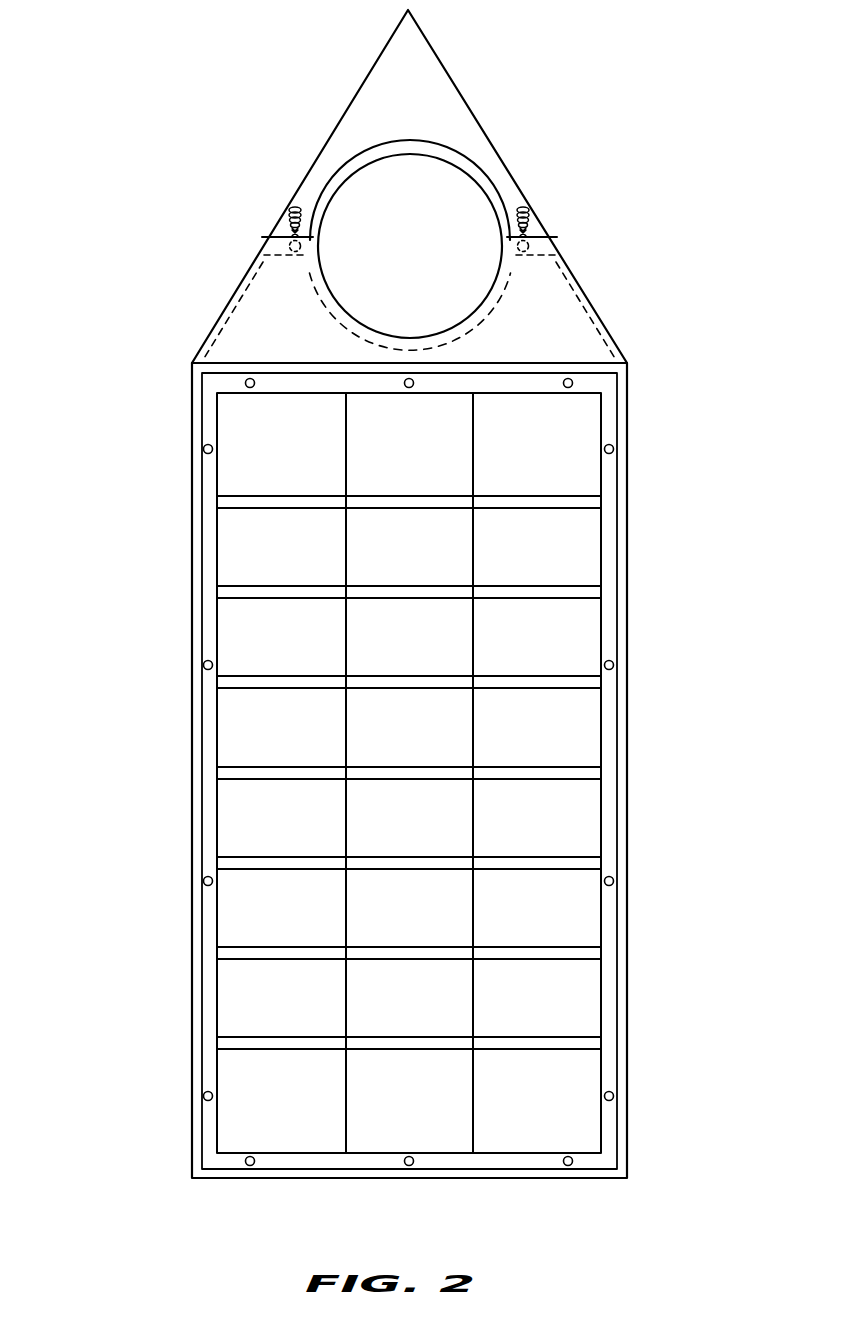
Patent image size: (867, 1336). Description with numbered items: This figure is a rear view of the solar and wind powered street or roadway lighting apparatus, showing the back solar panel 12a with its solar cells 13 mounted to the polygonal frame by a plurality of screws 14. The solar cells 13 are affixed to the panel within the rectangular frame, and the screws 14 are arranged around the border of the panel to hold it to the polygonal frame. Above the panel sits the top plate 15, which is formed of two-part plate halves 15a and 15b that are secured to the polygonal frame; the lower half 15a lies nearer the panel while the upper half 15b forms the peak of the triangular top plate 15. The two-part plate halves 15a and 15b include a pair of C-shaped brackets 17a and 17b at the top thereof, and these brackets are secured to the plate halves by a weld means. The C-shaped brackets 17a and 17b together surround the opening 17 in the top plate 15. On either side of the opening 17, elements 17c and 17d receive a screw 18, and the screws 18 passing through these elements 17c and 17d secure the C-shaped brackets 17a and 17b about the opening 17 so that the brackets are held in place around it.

The frame 12a is at (192, 536).
The solar cells 13 is at (237, 573).
The screws 14 is at (246, 383).
The top plate 15 is at (497, 146).
The top plate half 15a is at (279, 345).
The top plate half 15b is at (390, 115).
The opening 17 is at (397, 249).
The C-shaped bracket 17a is at (374, 154).
The C-shaped bracket 17b is at (447, 329).
The screw-receiving element 17c is at (281, 235).
The screw-receiving element 17d is at (267, 240).
The screw 18 is at (291, 206).